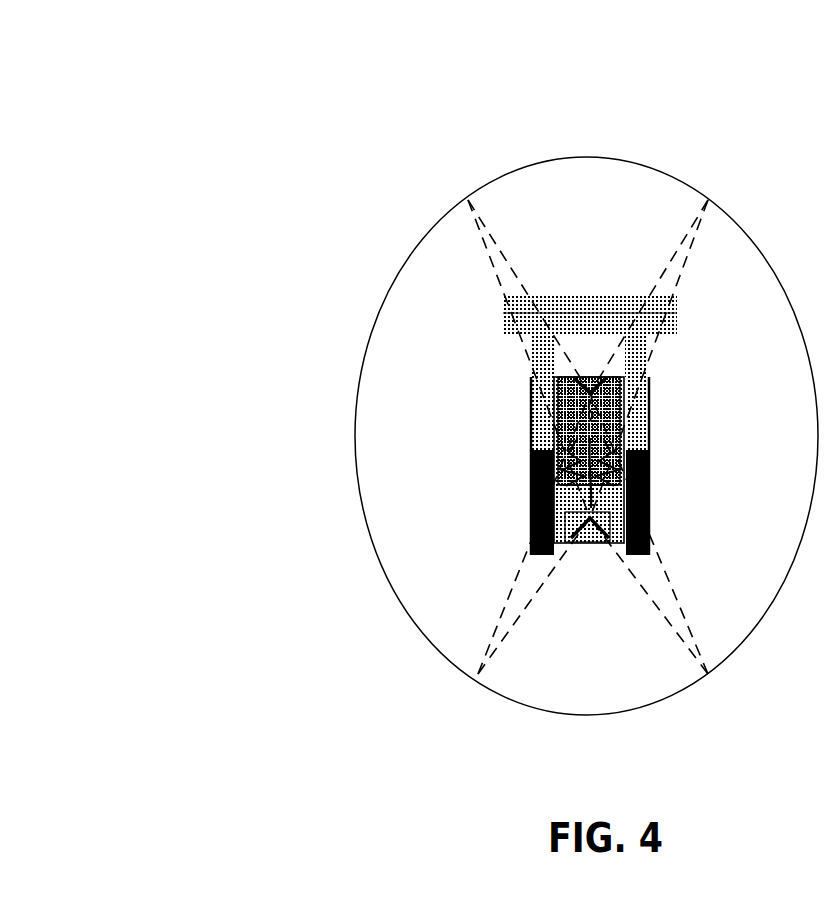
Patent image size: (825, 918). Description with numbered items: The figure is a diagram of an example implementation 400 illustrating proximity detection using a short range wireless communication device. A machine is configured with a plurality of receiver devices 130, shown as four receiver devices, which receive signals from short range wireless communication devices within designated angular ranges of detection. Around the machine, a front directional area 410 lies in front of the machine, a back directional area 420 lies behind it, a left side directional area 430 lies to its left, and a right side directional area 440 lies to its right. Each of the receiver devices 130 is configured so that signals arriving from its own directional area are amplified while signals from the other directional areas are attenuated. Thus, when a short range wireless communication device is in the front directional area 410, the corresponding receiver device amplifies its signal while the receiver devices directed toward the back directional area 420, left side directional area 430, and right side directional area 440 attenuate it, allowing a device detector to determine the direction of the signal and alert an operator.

The example implementation 400 is at (143, 51).
The receiver devices 130 is at (588, 437).
The front directional area 410 is at (608, 218).
The back directional area 420 is at (608, 651).
The left side directional area 430 is at (457, 446).
The right side directional area 440 is at (769, 443).